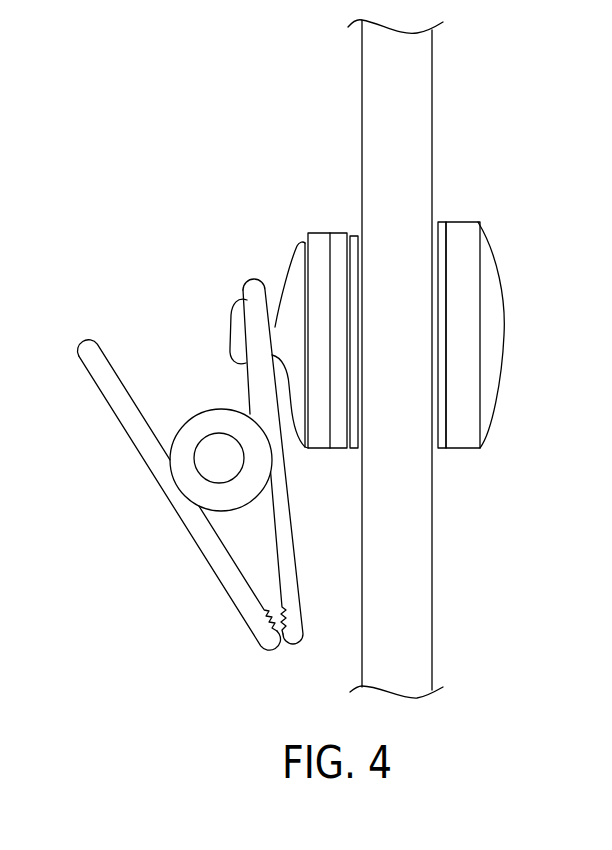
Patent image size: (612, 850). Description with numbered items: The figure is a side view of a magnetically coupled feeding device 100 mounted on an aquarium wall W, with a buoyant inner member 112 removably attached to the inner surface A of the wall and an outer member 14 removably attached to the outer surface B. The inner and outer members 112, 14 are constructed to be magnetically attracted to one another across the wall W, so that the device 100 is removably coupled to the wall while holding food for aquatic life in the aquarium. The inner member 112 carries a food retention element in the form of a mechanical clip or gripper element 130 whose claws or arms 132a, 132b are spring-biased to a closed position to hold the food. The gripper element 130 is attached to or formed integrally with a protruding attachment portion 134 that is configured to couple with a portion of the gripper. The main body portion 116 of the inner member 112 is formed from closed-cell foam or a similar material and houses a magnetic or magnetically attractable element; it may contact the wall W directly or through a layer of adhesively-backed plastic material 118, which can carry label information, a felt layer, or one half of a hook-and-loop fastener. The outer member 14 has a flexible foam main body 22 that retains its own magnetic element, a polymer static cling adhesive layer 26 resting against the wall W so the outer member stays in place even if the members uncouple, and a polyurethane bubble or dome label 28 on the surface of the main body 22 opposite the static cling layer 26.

The magnetically coupled feeding device 100 is at (203, 121).
The buoyant inner member 112 is at (151, 248).
The gripper element 130 is at (83, 338).
The arm 132a is at (220, 568).
The arm 132b is at (283, 517).
The protruding attachment portion 134 is at (232, 335).
The main body portion 116 is at (315, 221).
The adhesively-backed plastic material 118 is at (352, 234).
The outer member 14 is at (475, 475).
The static cling adhesive layer 26 is at (444, 228).
The main body 22 is at (458, 230).
The dome label 28 is at (486, 270).
The aquarium wall W is at (385, 183).
The inner surface A is at (362, 110).
The outer surface B is at (432, 128).